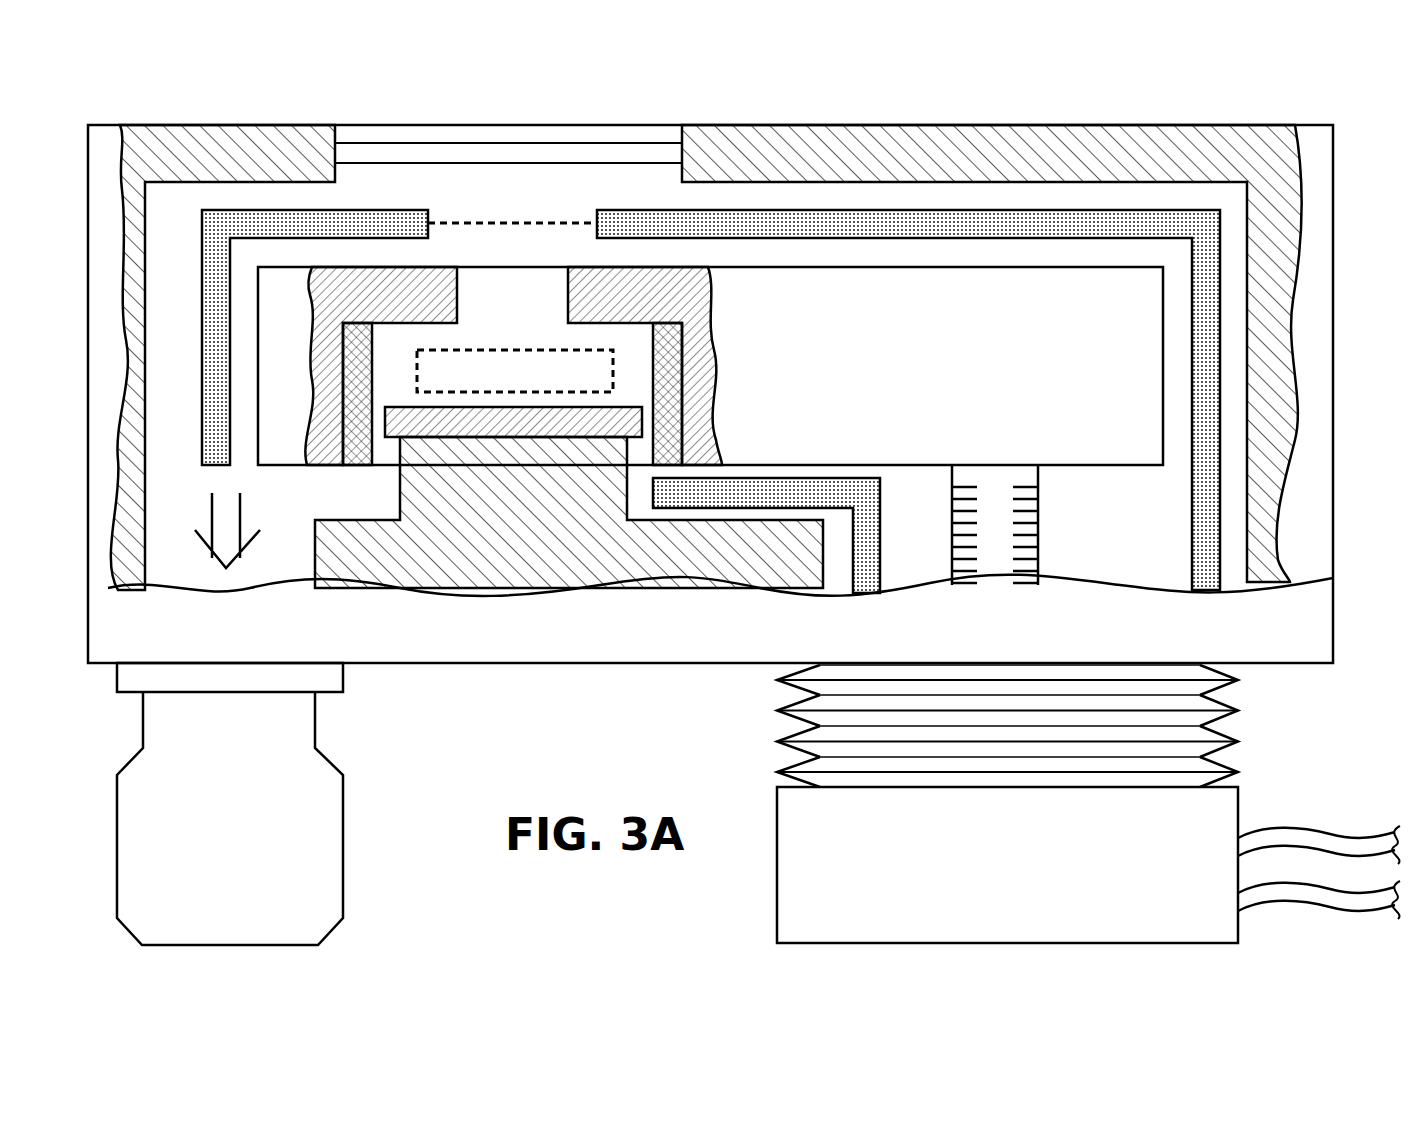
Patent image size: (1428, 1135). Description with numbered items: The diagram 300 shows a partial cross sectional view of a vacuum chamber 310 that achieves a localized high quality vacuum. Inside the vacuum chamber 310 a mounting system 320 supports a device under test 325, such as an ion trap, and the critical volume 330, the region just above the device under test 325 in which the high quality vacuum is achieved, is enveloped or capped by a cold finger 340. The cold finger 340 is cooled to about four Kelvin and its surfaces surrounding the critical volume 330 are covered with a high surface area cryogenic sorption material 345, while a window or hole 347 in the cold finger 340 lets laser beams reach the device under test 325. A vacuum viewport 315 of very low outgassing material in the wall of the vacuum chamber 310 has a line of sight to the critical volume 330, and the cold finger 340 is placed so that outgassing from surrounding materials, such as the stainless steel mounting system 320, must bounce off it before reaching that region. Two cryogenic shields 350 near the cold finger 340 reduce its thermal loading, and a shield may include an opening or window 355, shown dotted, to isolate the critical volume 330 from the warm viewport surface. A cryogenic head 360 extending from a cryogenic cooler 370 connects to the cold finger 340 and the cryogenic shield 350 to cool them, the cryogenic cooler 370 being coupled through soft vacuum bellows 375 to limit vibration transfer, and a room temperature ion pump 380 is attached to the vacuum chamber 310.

The diagram 300 is at (1290, 75).
The vacuum chamber 310 is at (720, 378).
The vacuum viewport 315 is at (401, 140).
The mounting system 320 is at (569, 512).
The device under test 325 is at (615, 422).
The critical volume 330 is at (515, 371).
The cold finger 340 is at (710, 366).
The cryogenic sorption material 345 is at (677, 365).
The window or hole 347 is at (513, 366).
The cryogenic shield 350 is at (1212, 525).
The opening or window 355 is at (527, 220).
The cryogenic head 360 is at (1046, 512).
The cryogenic cooler 370 is at (1099, 863).
The soft vacuum bellows 375 is at (1248, 734).
The room temperature ion pump 380 is at (230, 804).